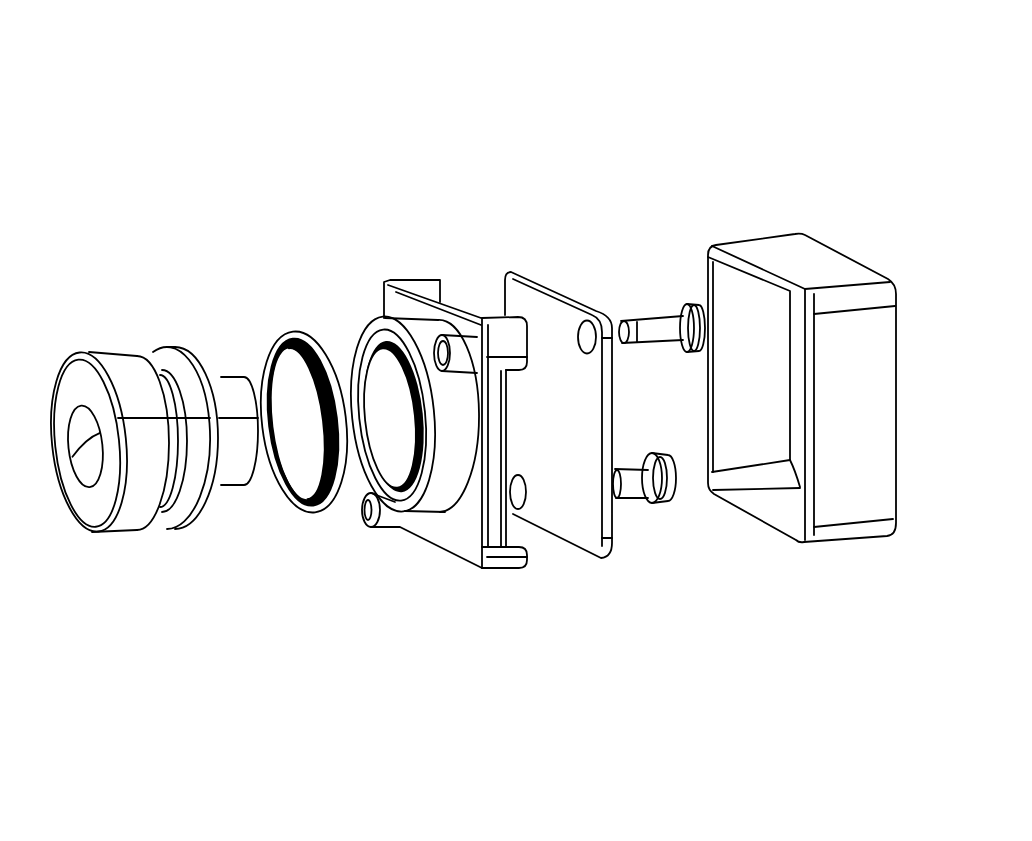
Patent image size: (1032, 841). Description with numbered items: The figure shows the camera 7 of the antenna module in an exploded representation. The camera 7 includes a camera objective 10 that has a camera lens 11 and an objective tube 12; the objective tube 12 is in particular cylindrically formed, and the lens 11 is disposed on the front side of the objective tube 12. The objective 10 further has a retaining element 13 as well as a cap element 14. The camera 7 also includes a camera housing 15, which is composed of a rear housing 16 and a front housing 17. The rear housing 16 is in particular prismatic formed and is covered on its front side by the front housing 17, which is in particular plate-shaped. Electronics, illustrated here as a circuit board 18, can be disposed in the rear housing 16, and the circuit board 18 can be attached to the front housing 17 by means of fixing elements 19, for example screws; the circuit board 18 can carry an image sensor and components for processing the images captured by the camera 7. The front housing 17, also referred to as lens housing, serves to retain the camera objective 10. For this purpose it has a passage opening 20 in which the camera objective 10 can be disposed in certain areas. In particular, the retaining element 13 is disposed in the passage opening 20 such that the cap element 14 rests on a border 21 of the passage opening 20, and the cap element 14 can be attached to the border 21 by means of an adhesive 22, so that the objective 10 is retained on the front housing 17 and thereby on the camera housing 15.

The camera 7 is at (669, 100).
The camera objective 10 is at (164, 273).
The camera lens 11 is at (100, 508).
The objective tube 12 is at (107, 362).
The retaining element 13 is at (222, 387).
The cap element 14 is at (173, 367).
The camera housing 15 is at (764, 572).
The rear housing 16 is at (853, 297).
The front housing 17 is at (402, 293).
The circuit board 18 is at (550, 310).
The fixing elements 19 is at (652, 323).
The passage opening 20 is at (380, 359).
The border 21 is at (373, 320).
The adhesive 22 is at (302, 498).